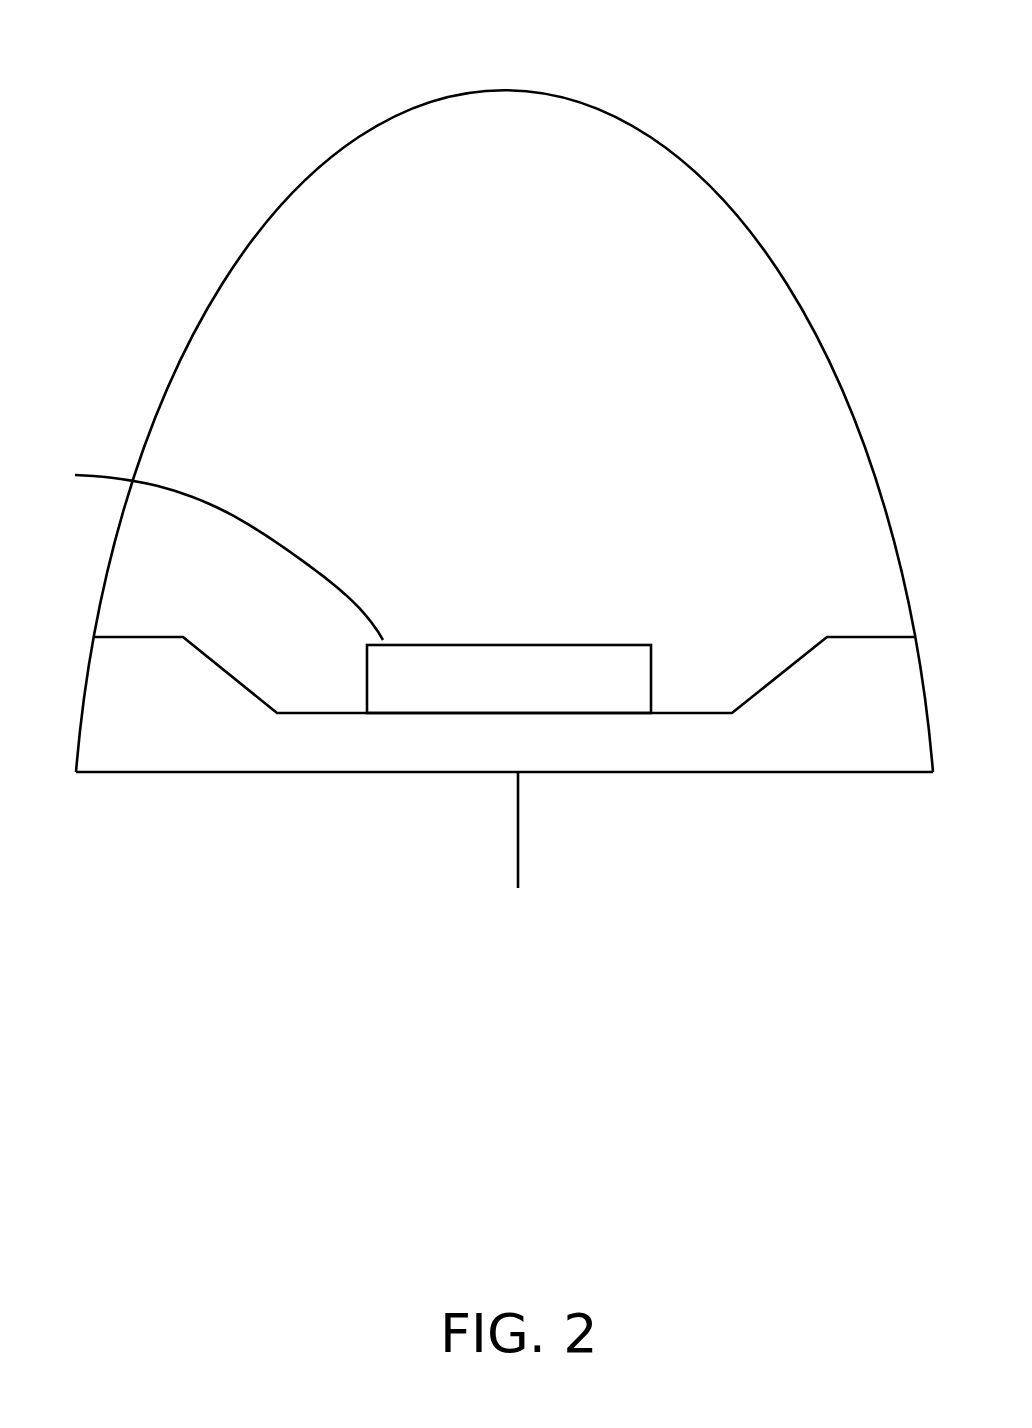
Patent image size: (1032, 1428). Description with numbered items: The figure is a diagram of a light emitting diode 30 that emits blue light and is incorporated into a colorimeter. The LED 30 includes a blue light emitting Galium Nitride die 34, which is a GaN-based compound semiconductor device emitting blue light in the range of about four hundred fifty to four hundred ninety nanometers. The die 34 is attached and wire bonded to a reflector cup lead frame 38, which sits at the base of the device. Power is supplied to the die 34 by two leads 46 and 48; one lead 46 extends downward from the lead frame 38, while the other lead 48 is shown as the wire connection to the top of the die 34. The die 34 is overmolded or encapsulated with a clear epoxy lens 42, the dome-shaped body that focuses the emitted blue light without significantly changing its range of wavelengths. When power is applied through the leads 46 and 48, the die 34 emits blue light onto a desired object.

The light emitting diode 30 is at (767, 53).
The Galium Nitride die 34 is at (528, 700).
The reflector cup lead frame 38 is at (817, 773).
The epoxy lens 42 is at (812, 328).
The lead 46 is at (518, 859).
The lead 48 is at (108, 477).